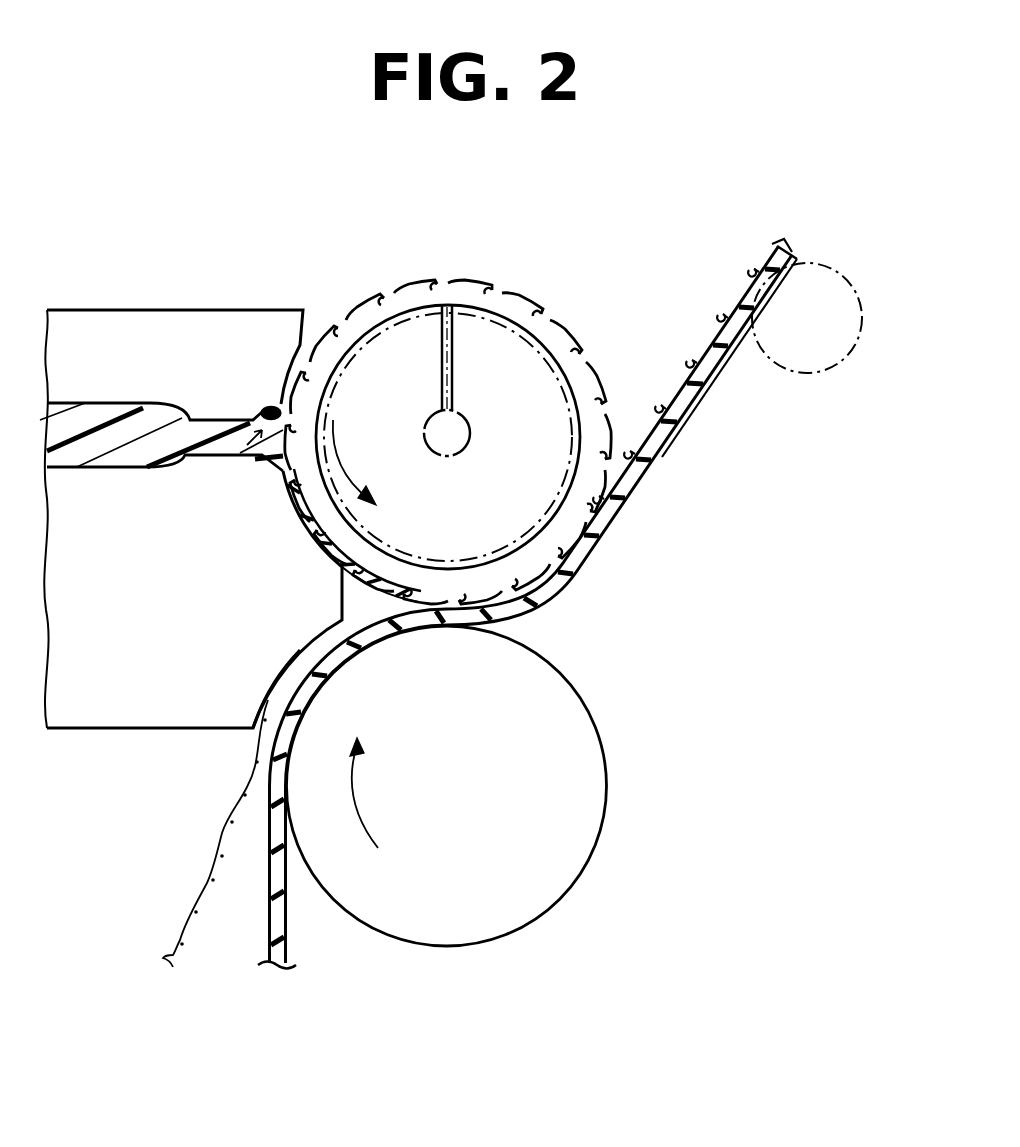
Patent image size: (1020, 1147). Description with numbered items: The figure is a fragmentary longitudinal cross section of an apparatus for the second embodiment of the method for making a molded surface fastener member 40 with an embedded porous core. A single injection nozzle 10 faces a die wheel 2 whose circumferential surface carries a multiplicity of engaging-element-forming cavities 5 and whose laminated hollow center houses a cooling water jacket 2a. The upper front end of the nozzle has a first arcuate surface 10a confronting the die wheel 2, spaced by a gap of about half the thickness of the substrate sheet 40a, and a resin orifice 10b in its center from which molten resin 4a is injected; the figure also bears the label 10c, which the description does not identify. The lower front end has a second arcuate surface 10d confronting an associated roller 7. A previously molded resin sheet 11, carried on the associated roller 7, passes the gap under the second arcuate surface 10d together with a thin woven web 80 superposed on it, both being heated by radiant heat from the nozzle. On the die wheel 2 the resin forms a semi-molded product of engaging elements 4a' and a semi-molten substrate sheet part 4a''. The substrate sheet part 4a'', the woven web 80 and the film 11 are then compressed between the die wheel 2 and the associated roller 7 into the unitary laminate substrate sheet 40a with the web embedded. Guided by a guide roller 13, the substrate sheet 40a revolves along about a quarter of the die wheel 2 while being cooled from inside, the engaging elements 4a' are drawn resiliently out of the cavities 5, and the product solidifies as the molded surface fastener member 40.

The die wheel 2 is at (540, 382).
The cooling water jacket 2a is at (530, 298).
The molten resin 4a is at (161, 353).
The engaging elements 4a' is at (729, 325).
The substrate sheet part 4a'' is at (448, 444).
The engaging-element-forming cavities 5 is at (507, 280).
The associated roller 7 is at (560, 727).
The injection nozzle 10 is at (190, 357).
The first arcuate surface 10a is at (300, 395).
The resin orifice 10b is at (257, 447).
The lower slot edge 10c is at (192, 462).
The second arcuate surface 10d is at (258, 720).
The resin sheet 11 is at (270, 896).
The guide roller 13 is at (822, 295).
The molded surface fastener member 40 is at (672, 458).
The substrate sheet 40a is at (643, 477).
The woven web 80 is at (215, 862).